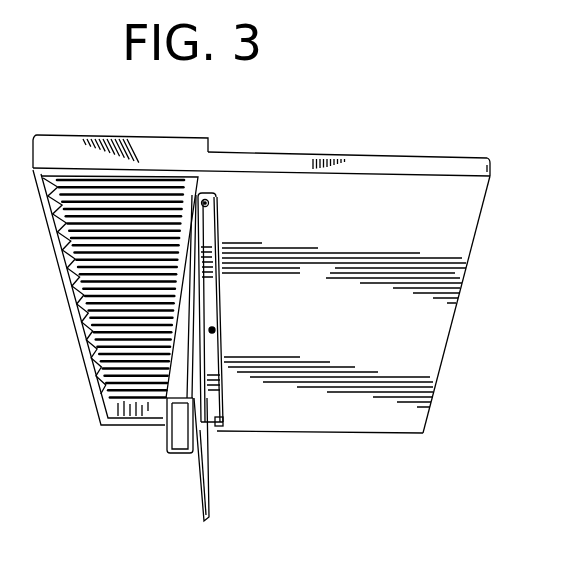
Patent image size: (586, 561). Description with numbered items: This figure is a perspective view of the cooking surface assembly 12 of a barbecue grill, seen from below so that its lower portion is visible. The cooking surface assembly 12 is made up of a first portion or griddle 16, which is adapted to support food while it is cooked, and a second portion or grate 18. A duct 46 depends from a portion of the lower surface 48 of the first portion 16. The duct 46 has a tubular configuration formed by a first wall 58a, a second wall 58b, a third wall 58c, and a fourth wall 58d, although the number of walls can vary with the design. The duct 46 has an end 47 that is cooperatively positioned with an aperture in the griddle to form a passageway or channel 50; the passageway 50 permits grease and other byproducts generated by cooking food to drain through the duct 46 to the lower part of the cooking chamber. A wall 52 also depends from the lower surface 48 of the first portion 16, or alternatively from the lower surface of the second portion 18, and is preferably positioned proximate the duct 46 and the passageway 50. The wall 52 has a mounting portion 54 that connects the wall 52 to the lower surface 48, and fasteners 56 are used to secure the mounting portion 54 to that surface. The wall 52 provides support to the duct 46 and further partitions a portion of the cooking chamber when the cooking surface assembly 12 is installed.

The cooking surface assembly 12 is at (283, 259).
The first portion or griddle 16 is at (377, 142).
The second portion or grate 18 is at (148, 125).
The duct 46 is at (167, 376).
The end of the duct 47 is at (176, 311).
The lower surface 48 is at (446, 216).
The passageway or channel 50 is at (203, 466).
The wall 52 is at (221, 361).
The mounting portion 54 is at (212, 222).
The fasteners 56 is at (212, 204).
The first wall 58a is at (168, 432).
The second wall 58b is at (164, 390).
The third wall 58c is at (180, 452).
The fourth wall 58d is at (203, 432).